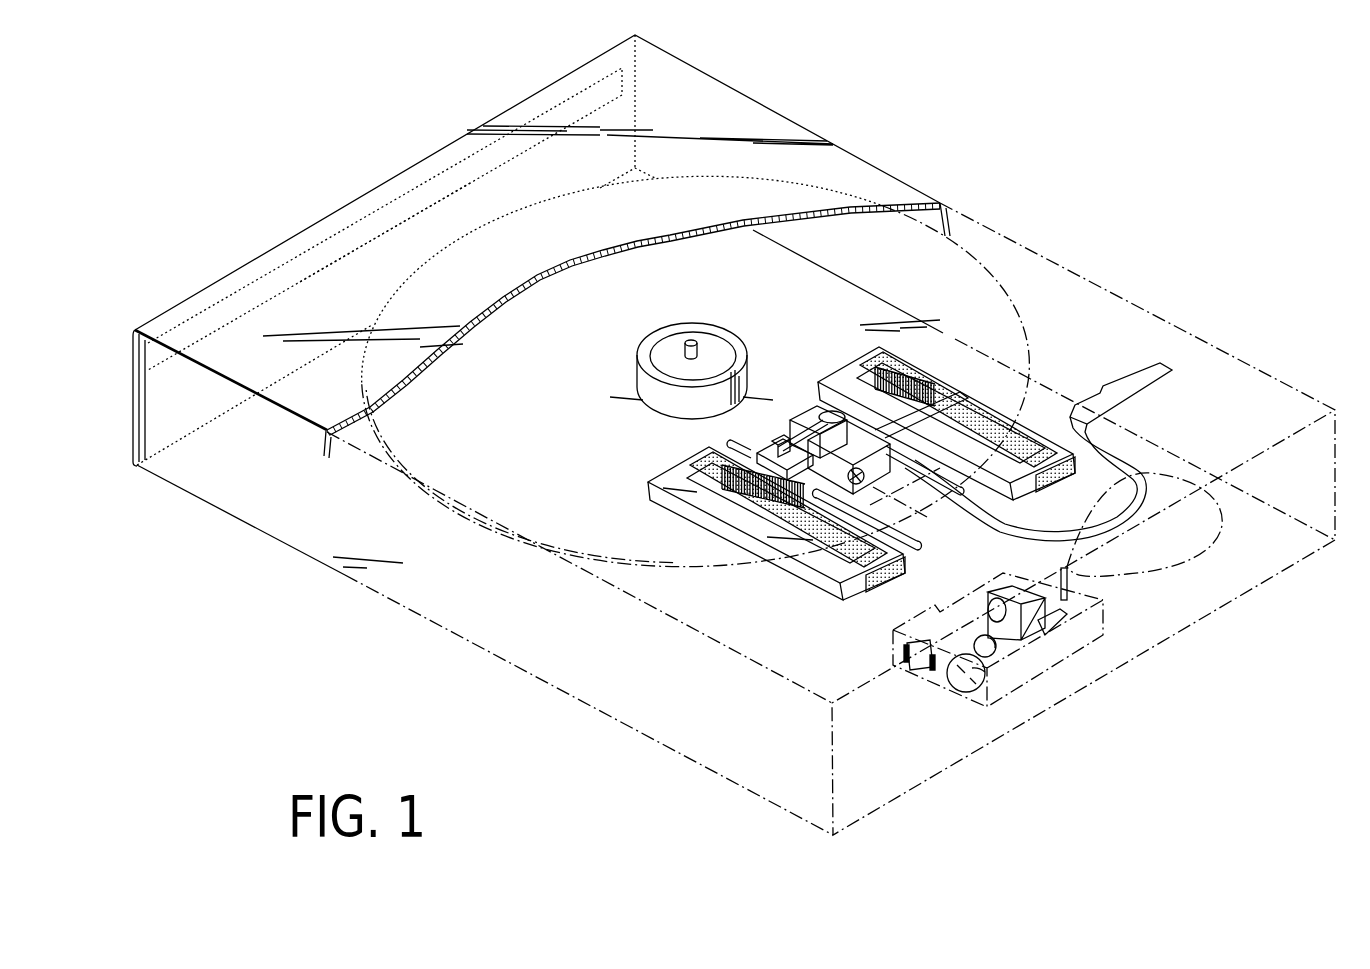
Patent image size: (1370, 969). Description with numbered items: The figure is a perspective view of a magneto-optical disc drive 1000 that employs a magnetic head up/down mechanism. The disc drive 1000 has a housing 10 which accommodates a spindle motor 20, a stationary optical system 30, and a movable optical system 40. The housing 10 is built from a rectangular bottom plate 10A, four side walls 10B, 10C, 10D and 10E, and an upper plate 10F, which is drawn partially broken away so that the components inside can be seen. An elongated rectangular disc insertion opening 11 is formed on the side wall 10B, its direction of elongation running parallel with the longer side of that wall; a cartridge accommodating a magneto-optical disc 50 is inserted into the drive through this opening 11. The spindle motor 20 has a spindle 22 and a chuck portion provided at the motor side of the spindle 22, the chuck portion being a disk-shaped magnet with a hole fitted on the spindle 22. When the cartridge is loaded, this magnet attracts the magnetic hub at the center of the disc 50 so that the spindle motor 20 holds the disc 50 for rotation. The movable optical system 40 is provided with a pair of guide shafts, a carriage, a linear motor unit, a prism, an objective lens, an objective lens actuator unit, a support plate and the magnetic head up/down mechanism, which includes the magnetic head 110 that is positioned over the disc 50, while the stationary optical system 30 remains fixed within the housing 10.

The magneto-optical disc drive 1000 is at (1018, 138).
The housing 10 is at (802, 128).
The disc insertion opening 11 is at (357, 222).
The bottom plate 10A is at (276, 494).
The side wall 10B is at (132, 392).
The side wall 10C is at (1195, 332).
The side wall 10D is at (1200, 625).
The side wall 10E is at (675, 750).
The upper plate 10F is at (1047, 270).
The spindle motor 20 is at (719, 333).
The spindle 22 is at (688, 345).
The movable optical system 40 is at (934, 366).
The magnetic head 110 is at (800, 404).
The magneto-optical disc 50 is at (1032, 348).
The stationary optical system 30 is at (1040, 655).